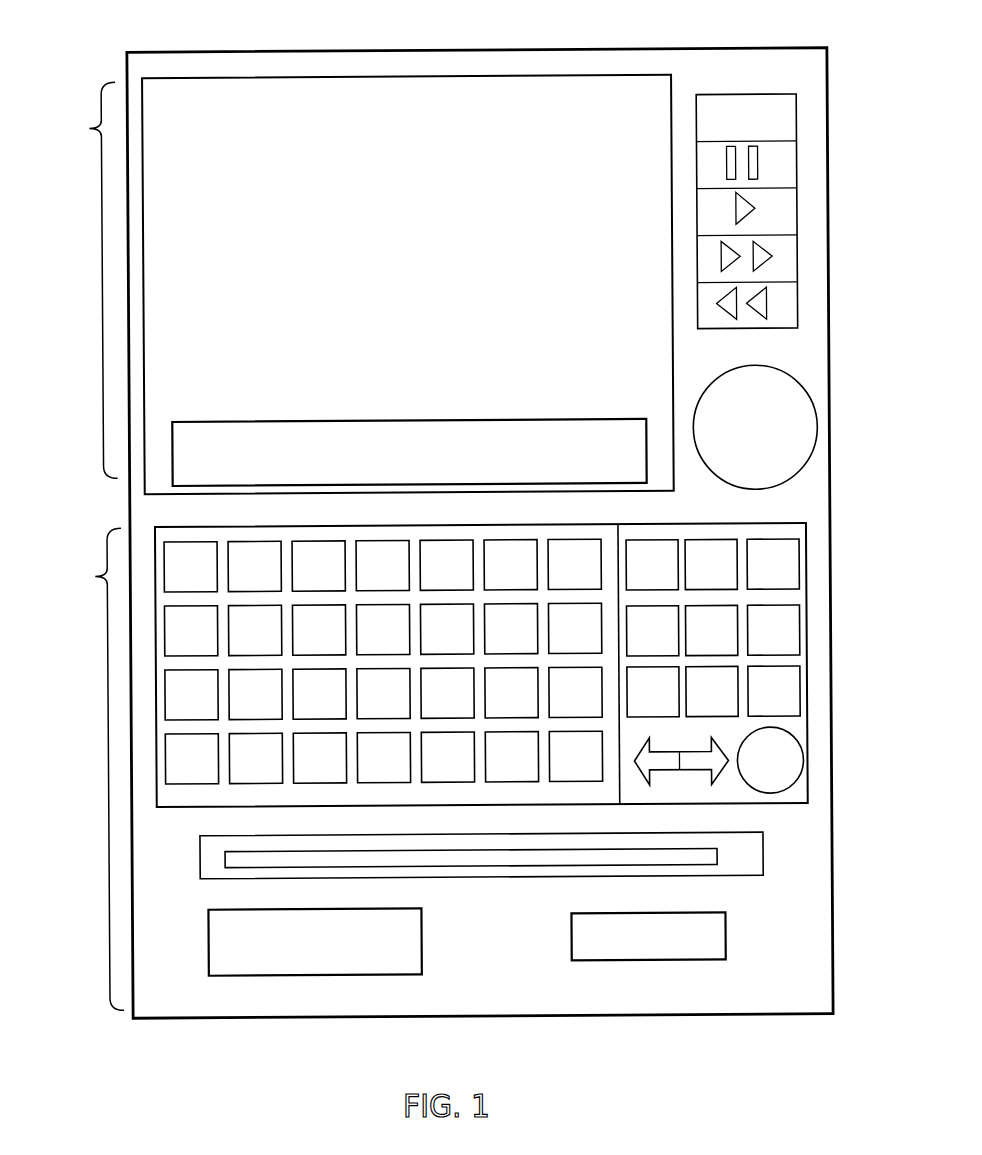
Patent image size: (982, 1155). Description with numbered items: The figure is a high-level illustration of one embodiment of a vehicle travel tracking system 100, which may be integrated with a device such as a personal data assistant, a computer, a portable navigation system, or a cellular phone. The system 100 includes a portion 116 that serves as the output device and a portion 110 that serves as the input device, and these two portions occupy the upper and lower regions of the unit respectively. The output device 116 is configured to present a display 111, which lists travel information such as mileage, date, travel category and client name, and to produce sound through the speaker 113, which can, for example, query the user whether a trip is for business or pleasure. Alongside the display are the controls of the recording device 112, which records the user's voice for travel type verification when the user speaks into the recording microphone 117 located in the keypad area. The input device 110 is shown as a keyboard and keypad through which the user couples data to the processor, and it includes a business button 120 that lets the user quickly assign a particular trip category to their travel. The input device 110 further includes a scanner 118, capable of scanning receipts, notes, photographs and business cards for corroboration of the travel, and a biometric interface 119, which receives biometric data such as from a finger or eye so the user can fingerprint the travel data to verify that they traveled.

The vehicle travel tracking system 100 is at (545, 50).
The data output portion / input device 110 is at (467, 766).
The display 111 is at (331, 76).
The recording device 112 is at (799, 97).
The speaker 113 is at (796, 381).
The data input portion / output device 116 is at (358, 251).
The recording microphone 117 is at (799, 750).
The scanner 118 is at (761, 870).
The biometric interface 119 is at (419, 940).
The business button 120 is at (723, 926).